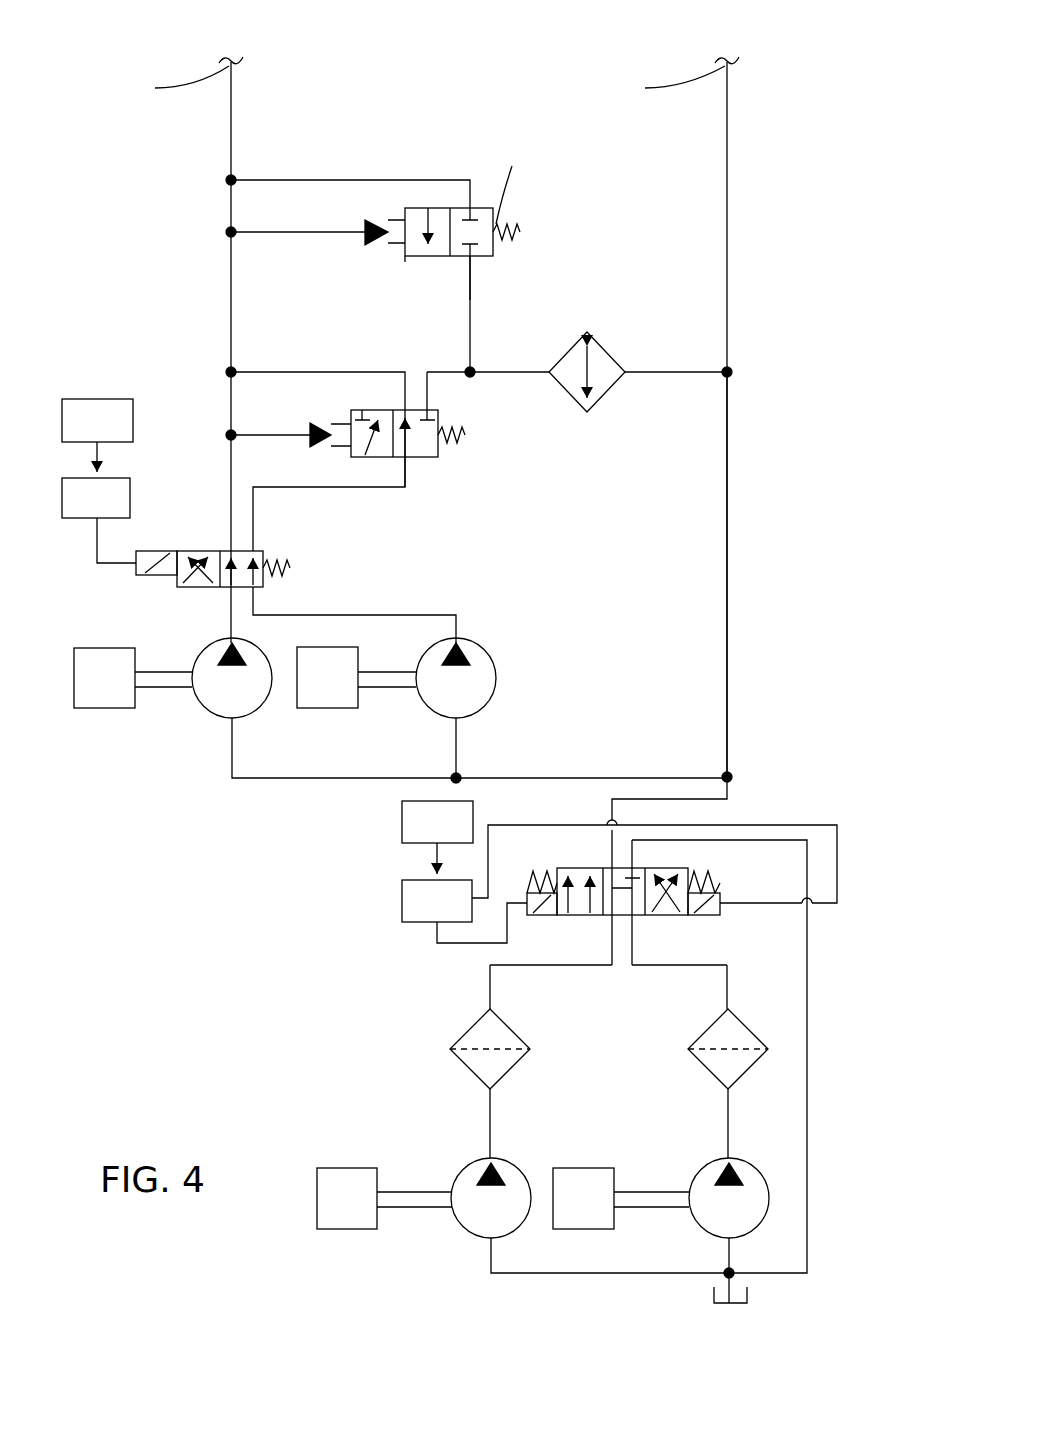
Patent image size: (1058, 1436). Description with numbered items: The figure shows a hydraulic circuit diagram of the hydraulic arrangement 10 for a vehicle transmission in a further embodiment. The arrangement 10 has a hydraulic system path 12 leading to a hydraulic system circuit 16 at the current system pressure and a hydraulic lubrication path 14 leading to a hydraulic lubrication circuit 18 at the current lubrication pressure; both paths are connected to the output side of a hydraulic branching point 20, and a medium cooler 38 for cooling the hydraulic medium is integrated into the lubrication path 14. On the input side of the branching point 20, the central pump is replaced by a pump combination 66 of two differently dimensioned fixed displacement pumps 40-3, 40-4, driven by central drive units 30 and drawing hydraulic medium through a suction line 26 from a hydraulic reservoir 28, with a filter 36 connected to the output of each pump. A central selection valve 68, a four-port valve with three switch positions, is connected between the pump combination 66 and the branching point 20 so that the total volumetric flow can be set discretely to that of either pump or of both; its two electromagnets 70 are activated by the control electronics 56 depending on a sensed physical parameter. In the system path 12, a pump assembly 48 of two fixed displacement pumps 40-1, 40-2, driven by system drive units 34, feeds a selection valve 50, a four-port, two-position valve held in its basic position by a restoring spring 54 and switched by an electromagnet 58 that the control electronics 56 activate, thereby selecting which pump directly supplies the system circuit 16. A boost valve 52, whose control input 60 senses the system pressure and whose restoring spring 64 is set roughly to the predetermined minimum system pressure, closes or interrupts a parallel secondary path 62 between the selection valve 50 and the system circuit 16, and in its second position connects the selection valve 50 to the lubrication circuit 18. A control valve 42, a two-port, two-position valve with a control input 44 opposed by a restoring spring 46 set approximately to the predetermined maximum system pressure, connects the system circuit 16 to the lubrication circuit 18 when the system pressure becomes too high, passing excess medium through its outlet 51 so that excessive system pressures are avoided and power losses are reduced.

The hydraulic arrangement 10 is at (245, 907).
The hydraulic system path 12 is at (345, 783).
The hydraulic lubrication path 14 is at (710, 637).
The hydraulic system circuit 16 is at (222, 46).
The hydraulic lubrication circuit 18 is at (721, 46).
The hydraulic branching point 20 is at (740, 778).
The suction line 26 is at (498, 1266).
The hydraulic reservoir 28 is at (725, 1307).
The central drive unit 30 is at (340, 1230).
The system drive unit 34 is at (80, 710).
The filter 36 is at (460, 1010).
The medium cooler 38 is at (608, 401).
The first fixed displacement pump 40-1 is at (222, 720).
The second fixed displacement pump 40-2 is at (501, 696).
The fixed displacement pump 40-3 is at (482, 1238).
The fixed displacement pump 40-4 is at (765, 1216).
The control valve 42 is at (438, 258).
The control input 44 is at (376, 246).
The restoring spring 46 is at (522, 234).
The pump assembly 48 is at (191, 649).
The selection valve 50 is at (212, 532).
The valve outlet 51 is at (480, 258).
The boost valve 52 is at (410, 258).
The restoring spring 54 is at (274, 562).
The control electronics 56 is at (449, 671).
The electromagnet 58 is at (151, 551).
The control input 60 is at (332, 428).
The parallel hydraulic secondary path 62 is at (320, 372).
The restoring spring 64 is at (457, 435).
The pump combination 66 is at (460, 1145).
The central selection valve 68 is at (606, 868).
The electromagnets 70 is at (543, 915).